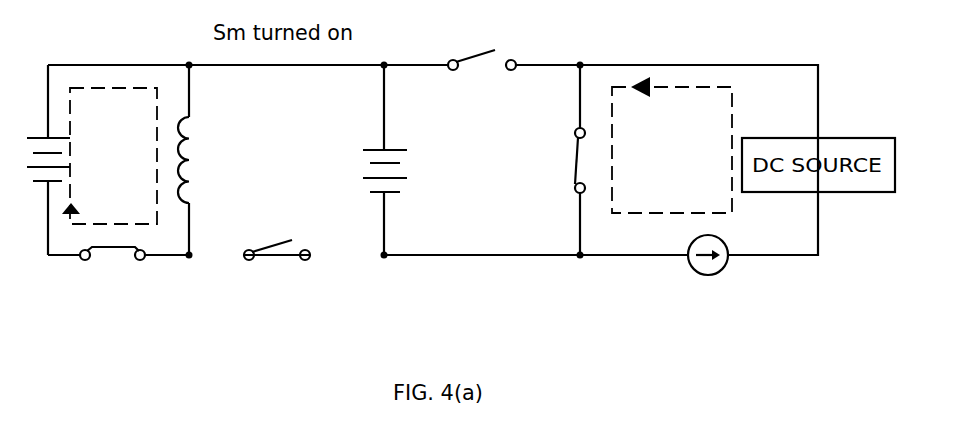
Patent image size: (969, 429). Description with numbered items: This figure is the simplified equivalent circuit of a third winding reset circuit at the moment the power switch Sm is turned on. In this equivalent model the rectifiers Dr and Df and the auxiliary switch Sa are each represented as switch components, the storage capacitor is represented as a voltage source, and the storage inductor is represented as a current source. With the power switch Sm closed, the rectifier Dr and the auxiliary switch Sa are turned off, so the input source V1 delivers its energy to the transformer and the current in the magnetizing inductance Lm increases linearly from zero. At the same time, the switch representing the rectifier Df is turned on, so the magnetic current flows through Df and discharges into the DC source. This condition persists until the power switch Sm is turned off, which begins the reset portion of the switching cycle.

The input source V1 is at (64, 159).
The magnetizing inductance Lm is at (206, 160).
The power switch Sm is at (112, 272).
The rectifier Dr is at (277, 235).
The auxiliary switch Sa is at (482, 46).
The rectifier Df is at (556, 160).